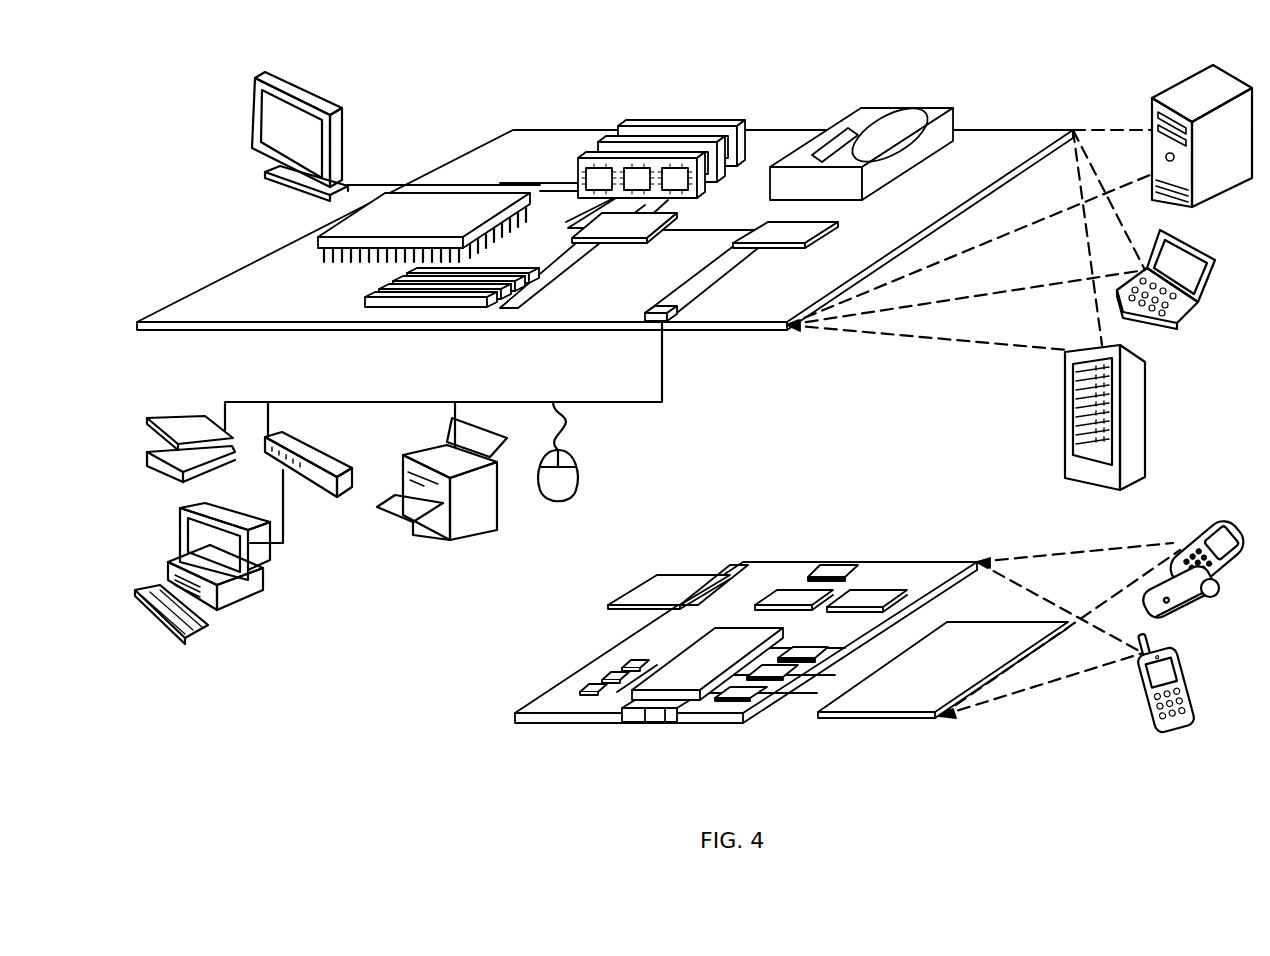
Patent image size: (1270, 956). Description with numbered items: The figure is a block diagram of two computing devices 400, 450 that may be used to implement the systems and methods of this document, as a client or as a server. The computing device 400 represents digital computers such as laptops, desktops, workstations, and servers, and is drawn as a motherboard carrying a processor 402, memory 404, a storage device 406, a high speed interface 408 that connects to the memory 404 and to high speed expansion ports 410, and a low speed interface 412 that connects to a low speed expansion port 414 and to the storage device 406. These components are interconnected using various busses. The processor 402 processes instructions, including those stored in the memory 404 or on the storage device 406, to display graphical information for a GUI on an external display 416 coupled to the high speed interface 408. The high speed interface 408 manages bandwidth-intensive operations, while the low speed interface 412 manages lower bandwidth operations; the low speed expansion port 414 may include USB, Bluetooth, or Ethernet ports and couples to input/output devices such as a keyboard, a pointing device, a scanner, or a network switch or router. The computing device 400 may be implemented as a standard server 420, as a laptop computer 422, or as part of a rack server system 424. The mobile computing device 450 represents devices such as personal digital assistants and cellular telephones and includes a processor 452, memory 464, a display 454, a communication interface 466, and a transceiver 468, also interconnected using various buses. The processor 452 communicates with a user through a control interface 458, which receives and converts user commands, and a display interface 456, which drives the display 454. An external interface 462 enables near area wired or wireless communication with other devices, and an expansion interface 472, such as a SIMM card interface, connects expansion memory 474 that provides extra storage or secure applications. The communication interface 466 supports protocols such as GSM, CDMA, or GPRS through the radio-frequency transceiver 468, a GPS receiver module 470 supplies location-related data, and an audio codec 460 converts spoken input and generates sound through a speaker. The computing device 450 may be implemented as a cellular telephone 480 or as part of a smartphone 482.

The computing device 400 is at (440, 99).
The processor 402 is at (318, 240).
The memory 404 is at (628, 128).
The storage device 406 is at (865, 121).
The high speed interface 408 is at (600, 225).
The high speed expansion ports 410 is at (380, 297).
The low speed interface 412 is at (800, 228).
The low speed expansion port 414 is at (668, 323).
The display 416 is at (264, 80).
The standard server 420 is at (1155, 132).
The laptop computer 422 is at (1216, 259).
The rack server system 424 is at (1065, 443).
The computing device 450 is at (487, 724).
The processor 452 is at (680, 680).
The display 454 is at (905, 703).
The display interface 456 is at (745, 690).
The control interface 458 is at (780, 670).
The audio codec 460 is at (805, 650).
The external interface 462 is at (658, 707).
The memory 464 is at (600, 680).
The communication interface 466 is at (793, 600).
The transceiver 468 is at (860, 600).
The GPS receiver module 470 is at (840, 568).
The expansion interface 472 is at (720, 572).
The expansion memory 474 is at (665, 580).
The cellular telephone 480 is at (1185, 525).
The smartphone 482 is at (1137, 701).